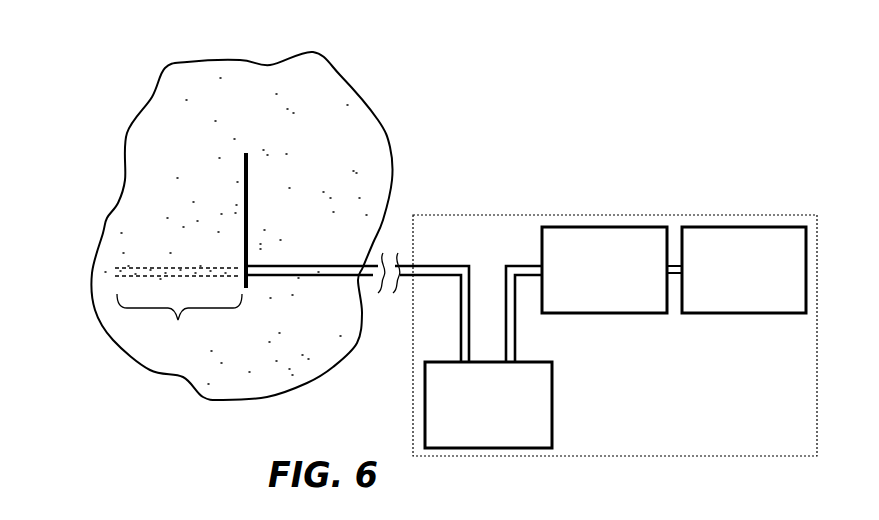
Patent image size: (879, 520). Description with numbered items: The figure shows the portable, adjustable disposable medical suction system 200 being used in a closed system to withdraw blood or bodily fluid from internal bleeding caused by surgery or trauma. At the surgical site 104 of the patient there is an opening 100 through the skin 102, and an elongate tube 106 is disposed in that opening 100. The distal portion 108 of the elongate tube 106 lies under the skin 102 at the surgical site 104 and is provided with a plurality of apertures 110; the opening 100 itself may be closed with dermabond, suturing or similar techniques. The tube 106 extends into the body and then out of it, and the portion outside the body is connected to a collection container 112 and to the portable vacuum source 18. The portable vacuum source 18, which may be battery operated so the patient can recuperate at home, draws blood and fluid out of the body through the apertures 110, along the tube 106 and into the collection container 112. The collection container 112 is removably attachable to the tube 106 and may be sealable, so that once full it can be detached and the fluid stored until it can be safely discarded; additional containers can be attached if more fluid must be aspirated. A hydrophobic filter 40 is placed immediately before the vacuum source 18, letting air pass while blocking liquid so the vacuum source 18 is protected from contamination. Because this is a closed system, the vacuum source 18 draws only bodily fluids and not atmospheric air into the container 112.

The surgical site 104 is at (313, 84).
The skin 102 is at (322, 148).
The opening 100 is at (248, 200).
The apertures 110 is at (130, 260).
The distal portion 108 is at (179, 323).
The elongate tube 106 is at (369, 278).
The portable, adjustable disposable medical suction system 200 is at (605, 215).
The hydrophobic filter 40 is at (618, 280).
The portable vacuum source 18 is at (755, 280).
The collection container 112 is at (506, 416).